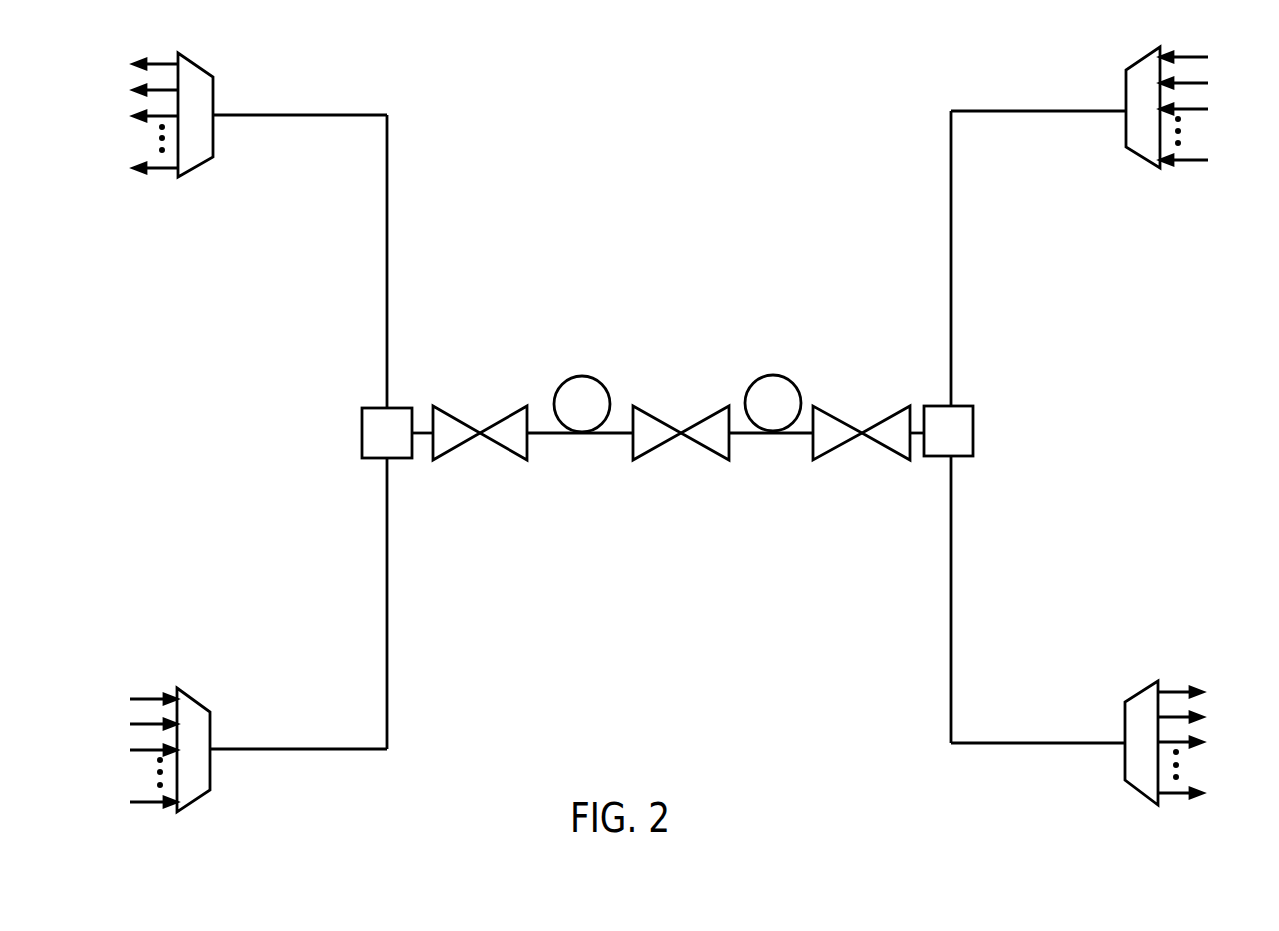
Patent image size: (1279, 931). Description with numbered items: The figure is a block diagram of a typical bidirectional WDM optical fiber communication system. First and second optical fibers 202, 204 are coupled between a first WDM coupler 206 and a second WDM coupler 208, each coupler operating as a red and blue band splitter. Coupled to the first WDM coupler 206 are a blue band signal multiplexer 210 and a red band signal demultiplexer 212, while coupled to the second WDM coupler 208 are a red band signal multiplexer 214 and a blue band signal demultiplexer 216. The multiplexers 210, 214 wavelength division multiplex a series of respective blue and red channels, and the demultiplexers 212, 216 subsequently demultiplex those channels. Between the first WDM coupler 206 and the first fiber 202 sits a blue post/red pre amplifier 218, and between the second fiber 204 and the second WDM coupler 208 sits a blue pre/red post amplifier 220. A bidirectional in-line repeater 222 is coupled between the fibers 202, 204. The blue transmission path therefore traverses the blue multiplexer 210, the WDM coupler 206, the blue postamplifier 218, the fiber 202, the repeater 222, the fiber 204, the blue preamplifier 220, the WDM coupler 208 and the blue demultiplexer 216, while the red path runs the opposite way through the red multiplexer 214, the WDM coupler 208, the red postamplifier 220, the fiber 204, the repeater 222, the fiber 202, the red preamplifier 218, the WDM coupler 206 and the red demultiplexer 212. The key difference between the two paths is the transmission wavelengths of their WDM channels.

The first optical fiber 202 is at (580, 377).
The second optical fiber 204 is at (783, 374).
The first WDM coupler 206 is at (405, 446).
The second WDM coupler 208 is at (966, 445).
The blue band signal multiplexer 210 is at (185, 812).
The red band signal demultiplexer 212 is at (187, 177).
The red band signal multiplexer 214 is at (1150, 168).
The blue band signal demultiplexer 216 is at (1148, 805).
The blue post/red pre amplifier 218 is at (507, 418).
The blue pre/red post amplifier 220 is at (887, 417).
The bidirectional in-line repeater 222 is at (708, 417).